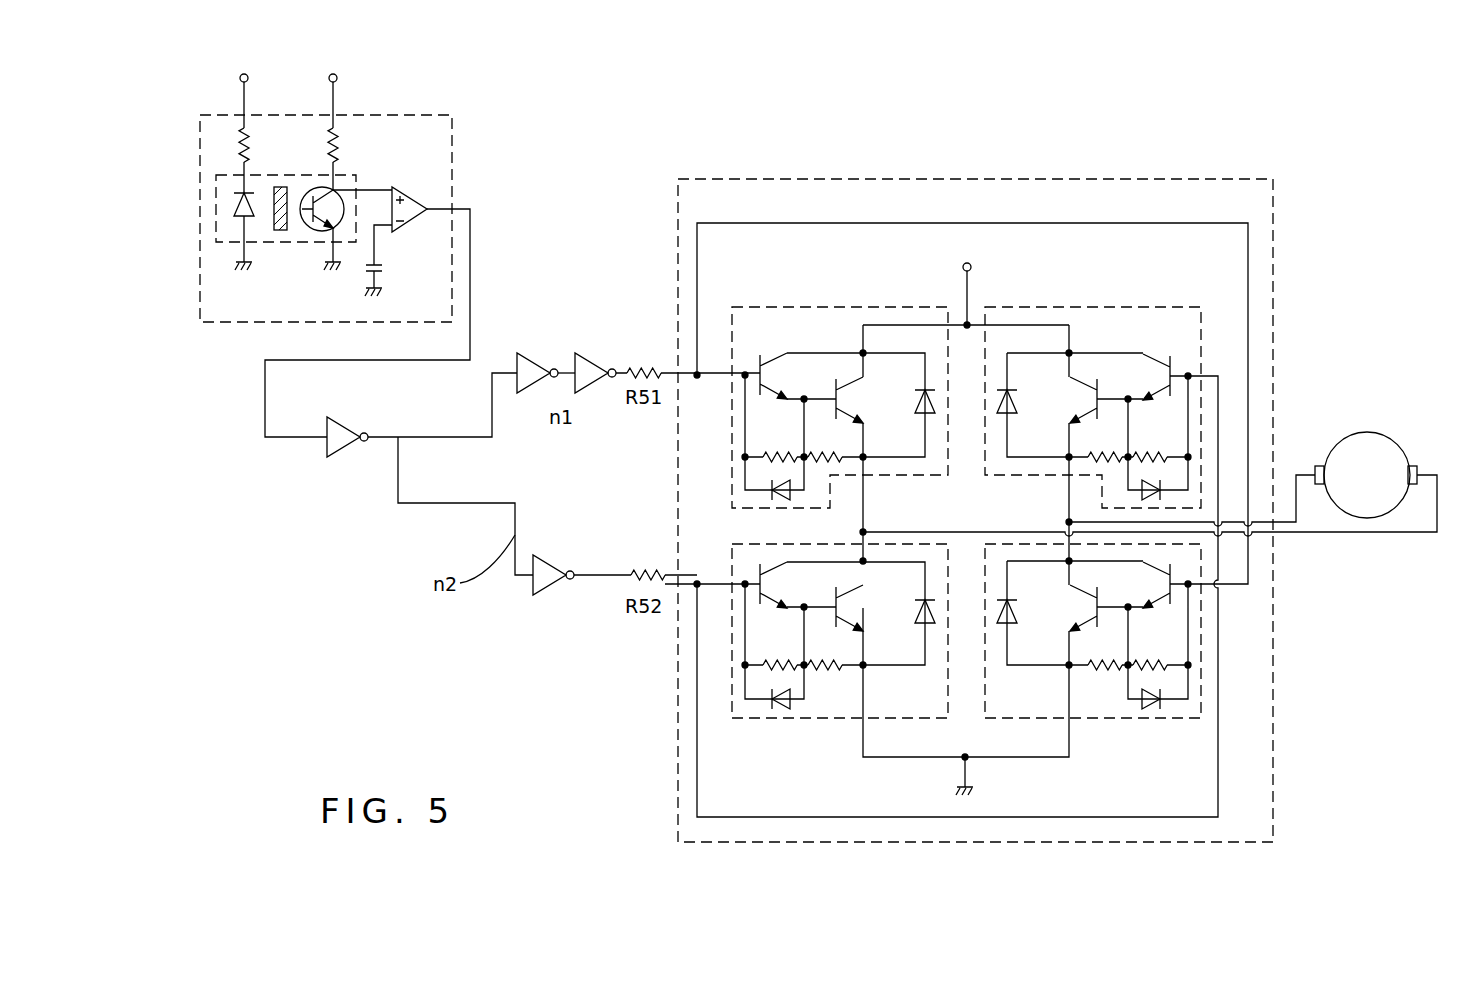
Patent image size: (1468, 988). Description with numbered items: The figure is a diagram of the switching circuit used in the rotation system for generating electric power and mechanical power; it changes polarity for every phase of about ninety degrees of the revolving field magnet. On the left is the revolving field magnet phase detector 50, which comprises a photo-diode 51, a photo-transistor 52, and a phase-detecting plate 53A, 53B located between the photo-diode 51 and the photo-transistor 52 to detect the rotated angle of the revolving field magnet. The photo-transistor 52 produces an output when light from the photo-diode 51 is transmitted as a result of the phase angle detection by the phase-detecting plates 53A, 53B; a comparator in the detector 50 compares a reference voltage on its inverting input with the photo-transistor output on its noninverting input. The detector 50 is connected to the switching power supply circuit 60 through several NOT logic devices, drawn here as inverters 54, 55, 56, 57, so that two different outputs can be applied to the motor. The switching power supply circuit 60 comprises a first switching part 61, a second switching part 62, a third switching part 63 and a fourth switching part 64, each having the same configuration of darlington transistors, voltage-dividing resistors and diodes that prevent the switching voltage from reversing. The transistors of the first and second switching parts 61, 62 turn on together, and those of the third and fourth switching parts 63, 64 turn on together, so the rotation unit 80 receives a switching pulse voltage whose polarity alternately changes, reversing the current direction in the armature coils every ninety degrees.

The revolving field magnet phase detector 50 is at (357, 180).
The photo-diode 51 is at (234, 205).
The photo-transistor 52 is at (301, 301).
The phase-detecting plate 53A is at (222, 270).
The phase-detecting plate 53B is at (278, 232).
The inverter 54 is at (338, 457).
The NOT logic device 55 is at (530, 354).
The NOT logic device 56 is at (545, 596).
The NOT logic device 57 is at (590, 354).
The switching power supply circuit 60 is at (992, 178).
The first switching part 61 is at (867, 307).
The second switching part 62 is at (1107, 718).
The third switching part 63 is at (1065, 307).
The fourth switching part 64 is at (732, 697).
The rotation unit 80 is at (1392, 440).